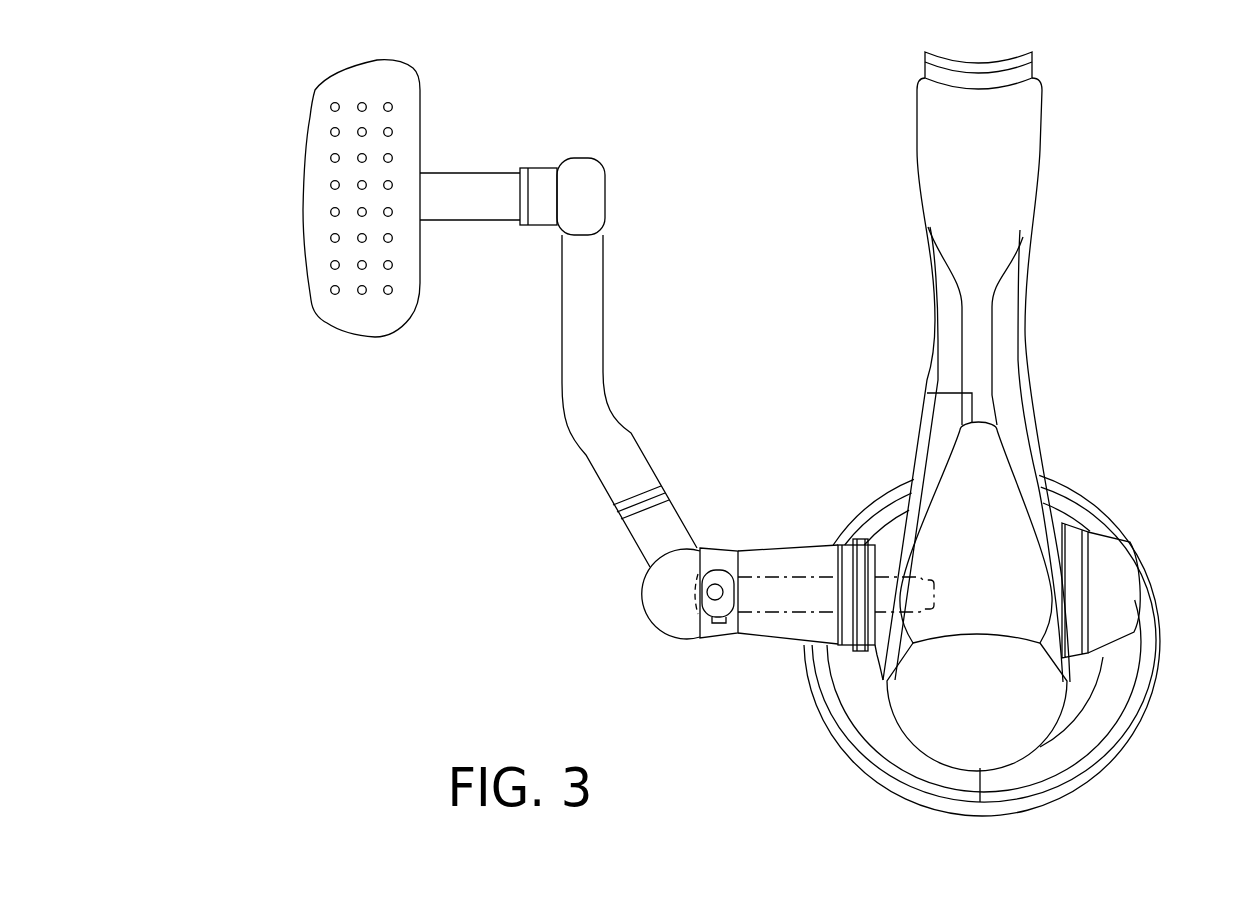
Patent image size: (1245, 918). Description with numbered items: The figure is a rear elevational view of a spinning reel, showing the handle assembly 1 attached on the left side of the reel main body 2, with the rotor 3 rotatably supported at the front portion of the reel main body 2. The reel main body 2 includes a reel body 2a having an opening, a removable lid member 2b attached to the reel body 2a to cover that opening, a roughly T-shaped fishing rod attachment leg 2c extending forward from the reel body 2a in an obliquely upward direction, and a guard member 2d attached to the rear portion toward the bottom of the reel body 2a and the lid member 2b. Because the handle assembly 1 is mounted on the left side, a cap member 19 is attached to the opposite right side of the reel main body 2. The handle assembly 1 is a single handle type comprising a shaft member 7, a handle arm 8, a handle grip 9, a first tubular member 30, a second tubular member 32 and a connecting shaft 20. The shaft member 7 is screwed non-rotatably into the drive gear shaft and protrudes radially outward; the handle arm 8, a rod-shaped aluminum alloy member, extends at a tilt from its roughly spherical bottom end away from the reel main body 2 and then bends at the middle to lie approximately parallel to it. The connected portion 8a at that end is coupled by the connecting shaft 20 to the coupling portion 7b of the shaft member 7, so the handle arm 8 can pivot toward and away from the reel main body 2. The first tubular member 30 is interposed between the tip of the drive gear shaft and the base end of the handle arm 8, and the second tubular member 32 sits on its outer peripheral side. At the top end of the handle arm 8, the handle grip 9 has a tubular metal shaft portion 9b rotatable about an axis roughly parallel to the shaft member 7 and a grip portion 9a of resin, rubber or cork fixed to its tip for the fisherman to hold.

The handle assembly 1 is at (304, 82).
The reel main body 2 is at (1116, 335).
The reel body 2a is at (1028, 467).
The lid member 2b is at (930, 444).
The fishing rod attachment leg 2c is at (982, 249).
The guard member 2d is at (933, 690).
The rotor 3 is at (1144, 743).
The shaft member 7 is at (786, 626).
The coupling portion 7b is at (724, 640).
The handle arm 8 is at (568, 461).
The connected portion 8a is at (723, 553).
The handle grip 9 is at (315, 176).
The grip portion 9a is at (370, 303).
The shaft portion 9b is at (470, 212).
The cap member 19 is at (1115, 574).
The connecting shaft 20 is at (718, 627).
The first tubular member 30 is at (718, 551).
The second tubular member 32 is at (793, 558).